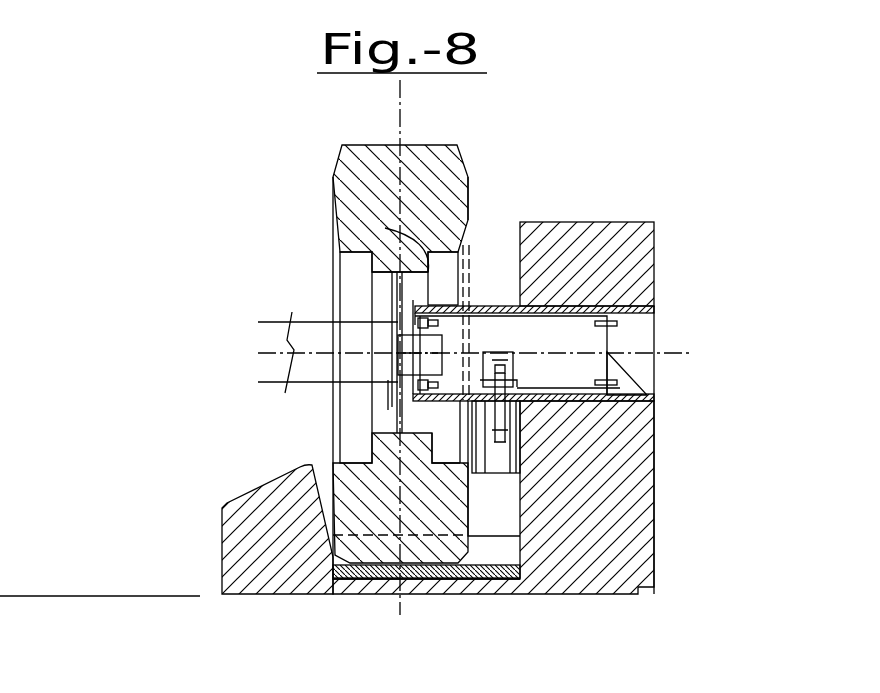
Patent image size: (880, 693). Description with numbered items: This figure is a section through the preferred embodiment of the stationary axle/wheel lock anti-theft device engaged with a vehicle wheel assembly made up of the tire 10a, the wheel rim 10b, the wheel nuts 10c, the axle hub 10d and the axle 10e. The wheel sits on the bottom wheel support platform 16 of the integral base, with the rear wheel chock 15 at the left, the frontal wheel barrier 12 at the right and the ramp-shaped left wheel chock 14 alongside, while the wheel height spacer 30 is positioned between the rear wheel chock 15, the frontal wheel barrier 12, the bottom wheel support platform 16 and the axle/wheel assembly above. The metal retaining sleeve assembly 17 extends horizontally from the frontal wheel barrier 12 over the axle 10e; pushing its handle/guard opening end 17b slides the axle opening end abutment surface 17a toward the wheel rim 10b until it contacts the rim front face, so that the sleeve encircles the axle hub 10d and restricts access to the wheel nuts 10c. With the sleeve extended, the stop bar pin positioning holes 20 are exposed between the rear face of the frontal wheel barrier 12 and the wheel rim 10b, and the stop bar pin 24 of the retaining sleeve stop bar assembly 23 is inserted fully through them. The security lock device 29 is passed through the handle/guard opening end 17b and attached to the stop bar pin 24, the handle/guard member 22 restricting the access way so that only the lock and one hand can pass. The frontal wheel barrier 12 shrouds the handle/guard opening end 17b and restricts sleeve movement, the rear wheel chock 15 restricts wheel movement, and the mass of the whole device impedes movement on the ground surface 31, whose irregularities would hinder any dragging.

The tire 10a is at (333, 175).
The wheel rim 10b is at (418, 263).
The wheel nuts 10c is at (418, 383).
The axle hub 10d is at (445, 395).
The axle 10e is at (313, 322).
The frontal wheel barrier 12 is at (655, 263).
The left wheel chock 14 is at (520, 527).
The rear wheel chock 15 is at (222, 518).
The bottom wheel support platform 16 is at (520, 562).
The retaining sleeve assembly 17 is at (490, 303).
The retaining sleeve axle opening end abutment surface 17a is at (418, 322).
The retaining sleeve handle/guard opening end 17b is at (657, 322).
The stop bar pin positioning holes 20 is at (530, 388).
The handle/guard member 22 is at (550, 395).
The retaining sleeve stop bar assembly 23 is at (523, 475).
The stop bar pin 24 is at (518, 432).
The security lock device 29 is at (515, 363).
The wheel height spacer 30 is at (495, 560).
The ground surface 31 is at (75, 597).